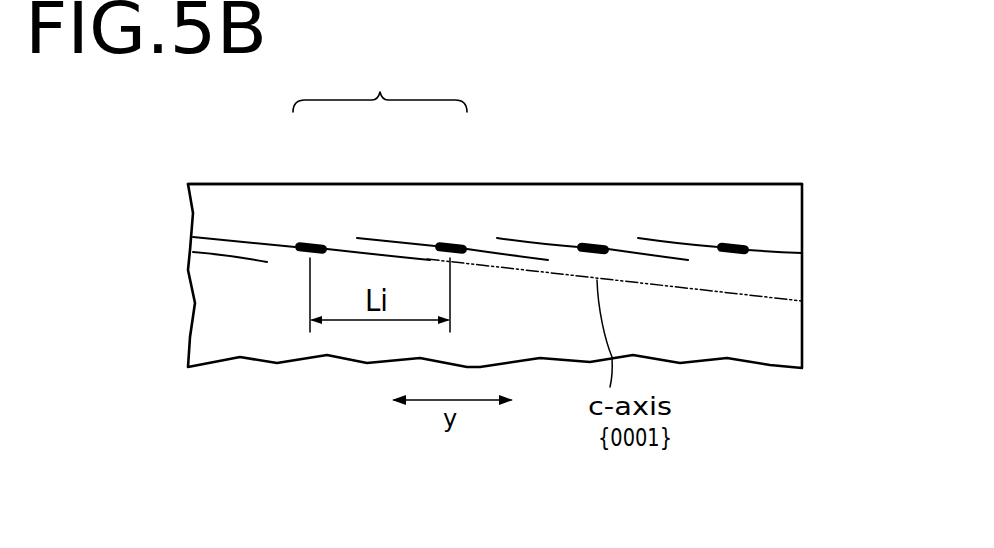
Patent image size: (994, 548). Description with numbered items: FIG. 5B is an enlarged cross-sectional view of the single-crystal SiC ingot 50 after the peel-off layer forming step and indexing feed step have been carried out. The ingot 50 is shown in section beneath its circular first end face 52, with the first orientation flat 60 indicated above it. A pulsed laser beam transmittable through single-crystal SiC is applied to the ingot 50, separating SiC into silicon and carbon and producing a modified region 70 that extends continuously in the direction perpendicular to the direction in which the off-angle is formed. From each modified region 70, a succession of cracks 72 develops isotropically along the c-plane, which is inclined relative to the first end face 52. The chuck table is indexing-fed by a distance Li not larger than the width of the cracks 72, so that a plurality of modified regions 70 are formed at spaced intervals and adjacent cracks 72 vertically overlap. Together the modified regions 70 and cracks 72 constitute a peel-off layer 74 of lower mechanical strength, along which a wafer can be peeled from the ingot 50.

The ingot 50 is at (231, 184).
The first end face 52 is at (580, 183).
The first orientation flat 60 is at (521, 0).
The modified region 70 is at (313, 245).
The cracks 72 is at (477, 250).
The peel-off layer 74 is at (380, 83).